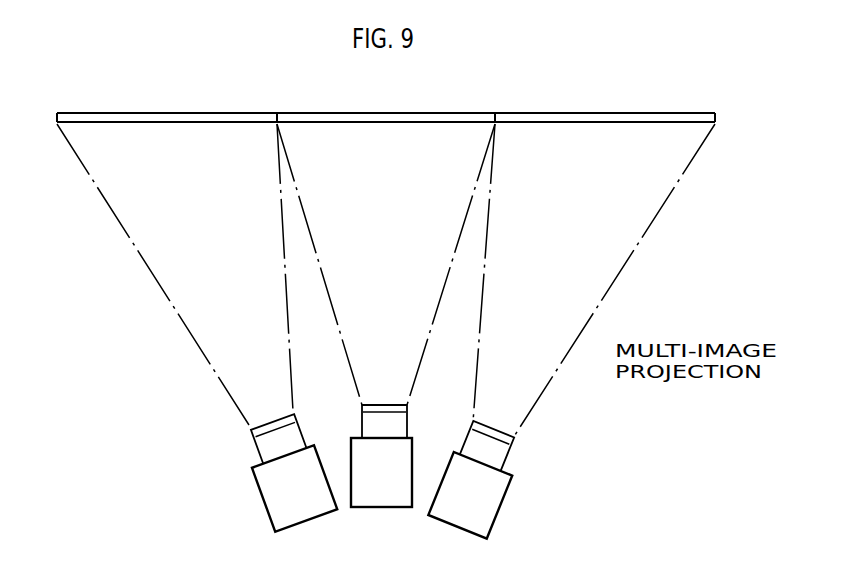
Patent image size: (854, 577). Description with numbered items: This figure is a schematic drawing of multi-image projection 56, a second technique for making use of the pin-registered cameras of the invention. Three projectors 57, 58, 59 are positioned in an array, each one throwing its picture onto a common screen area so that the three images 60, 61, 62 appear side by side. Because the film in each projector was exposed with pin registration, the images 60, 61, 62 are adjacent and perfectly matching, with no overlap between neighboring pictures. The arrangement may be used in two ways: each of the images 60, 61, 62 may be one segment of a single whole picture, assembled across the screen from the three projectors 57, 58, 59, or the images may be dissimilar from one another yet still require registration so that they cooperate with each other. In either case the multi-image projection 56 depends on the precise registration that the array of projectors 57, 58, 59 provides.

The multi-image projection 56 is at (160, 340).
The projector 57 is at (283, 485).
The projector 58 is at (387, 488).
The projector 59 is at (485, 515).
The image 60 is at (218, 121).
The image 61 is at (377, 121).
The image 62 is at (642, 122).